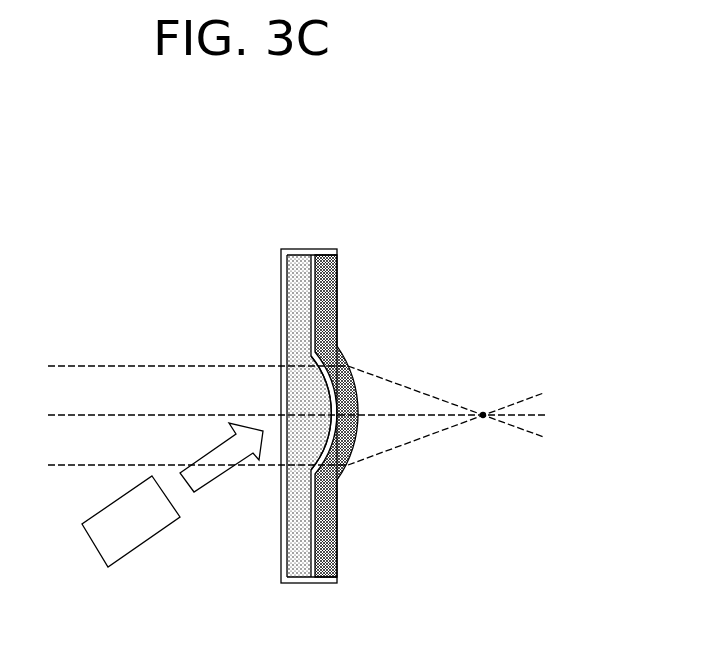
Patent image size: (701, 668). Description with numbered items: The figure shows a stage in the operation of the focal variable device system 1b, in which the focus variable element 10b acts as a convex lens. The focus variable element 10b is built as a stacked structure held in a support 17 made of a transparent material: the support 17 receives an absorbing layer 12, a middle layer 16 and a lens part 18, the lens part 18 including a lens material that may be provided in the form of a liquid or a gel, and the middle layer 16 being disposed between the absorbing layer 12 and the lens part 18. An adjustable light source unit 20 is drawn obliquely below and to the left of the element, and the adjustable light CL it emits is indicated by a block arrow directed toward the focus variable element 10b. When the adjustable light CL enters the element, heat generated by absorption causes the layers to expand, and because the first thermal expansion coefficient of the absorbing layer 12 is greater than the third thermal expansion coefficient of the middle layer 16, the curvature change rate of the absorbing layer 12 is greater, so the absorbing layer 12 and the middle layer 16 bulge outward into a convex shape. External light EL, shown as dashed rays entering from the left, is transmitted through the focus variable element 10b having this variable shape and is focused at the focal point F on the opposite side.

The focal variable device system 1b is at (461, 162).
The focus variable element 10b is at (308, 378).
The absorbing layer 12 is at (336, 276).
The middle layer 16 is at (313, 308).
The support 17 is at (281, 285).
The lens part 18 is at (300, 342).
The adjustable light source unit 20 is at (146, 542).
The external light EL is at (93, 366).
The adjustable light CL is at (213, 479).
The focal point F is at (483, 413).